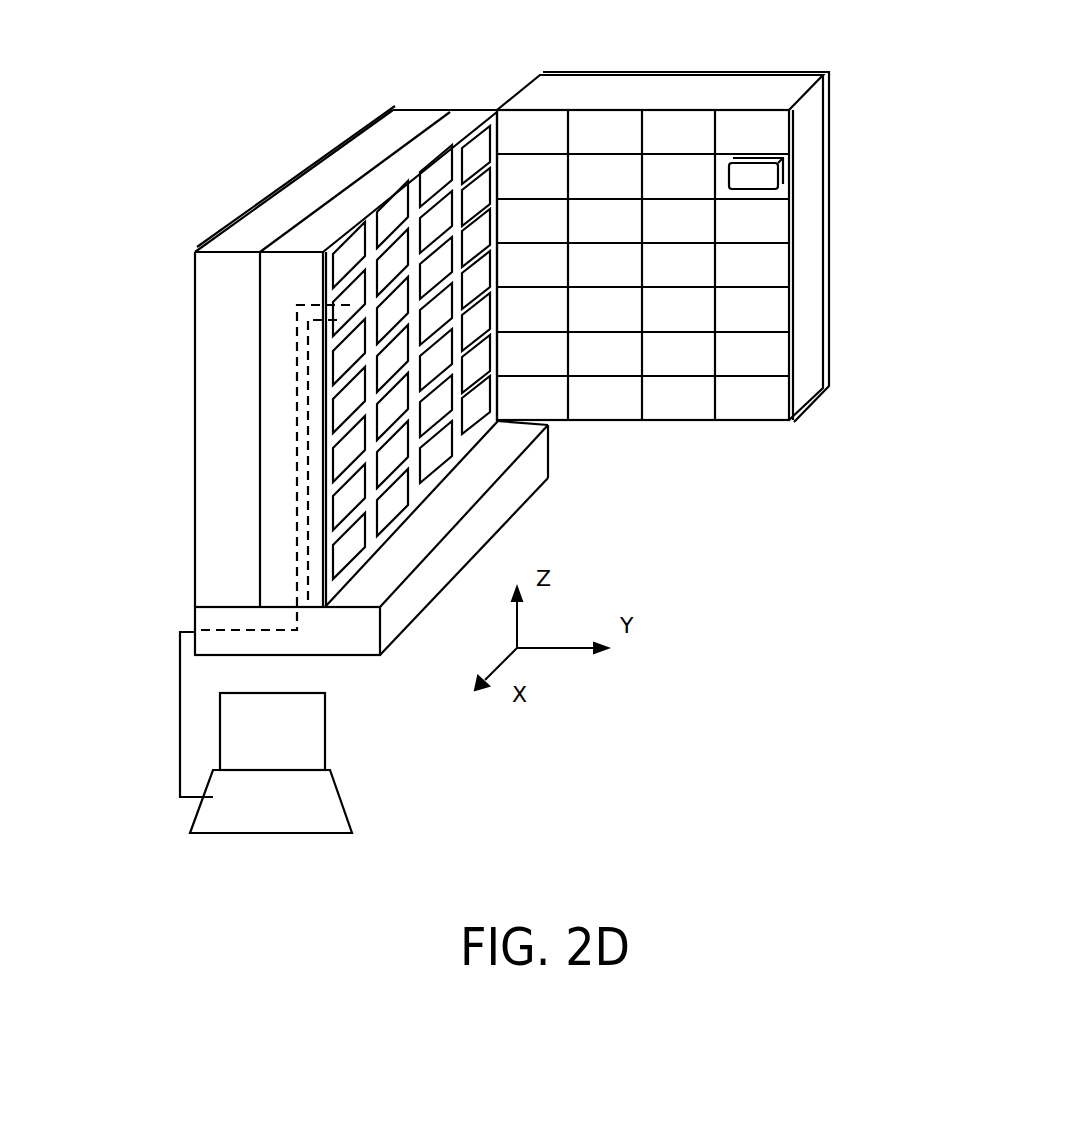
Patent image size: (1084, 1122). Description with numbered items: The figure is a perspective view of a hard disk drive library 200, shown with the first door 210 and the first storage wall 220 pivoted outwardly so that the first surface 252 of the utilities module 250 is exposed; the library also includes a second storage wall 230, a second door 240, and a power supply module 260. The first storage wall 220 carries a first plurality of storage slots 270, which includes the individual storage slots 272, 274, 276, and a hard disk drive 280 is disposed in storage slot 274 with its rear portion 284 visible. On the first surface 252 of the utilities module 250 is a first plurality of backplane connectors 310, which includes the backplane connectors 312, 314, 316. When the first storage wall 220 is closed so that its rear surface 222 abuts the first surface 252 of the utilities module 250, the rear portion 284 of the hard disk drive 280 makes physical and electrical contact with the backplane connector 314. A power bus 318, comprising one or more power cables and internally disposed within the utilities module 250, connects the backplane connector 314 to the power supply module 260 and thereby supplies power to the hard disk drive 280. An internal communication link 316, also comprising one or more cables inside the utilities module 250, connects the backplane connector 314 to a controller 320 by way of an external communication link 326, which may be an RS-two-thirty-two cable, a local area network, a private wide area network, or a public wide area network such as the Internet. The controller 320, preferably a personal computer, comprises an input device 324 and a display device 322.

The hard disk drive library 200 is at (410, 540).
The first door 210 is at (695, 211).
The first storage wall 220 is at (705, 100).
The rear surface 222 is at (653, 138).
The second storage wall 230 is at (346, 340).
The second door 240 is at (305, 172).
The utilities module 250 is at (305, 228).
The first surface 252 is at (410, 329).
The power supply module 260 is at (360, 636).
The first plurality of storage slots 270 is at (725, 122).
The storage slot 272 is at (773, 123).
The storage slot 274 is at (785, 178).
The storage slot 276 is at (777, 228).
The hard disk drive 280 is at (783, 157).
The rear portion 284 is at (773, 177).
The first plurality of backplane connectors 310 is at (393, 225).
The backplane connector 312 is at (342, 258).
The backplane connector 314 is at (350, 302).
The internal communication link 316 is at (297, 360).
The power bus 318 is at (308, 405).
The controller 320 is at (303, 809).
The display device 322 is at (303, 705).
The input device 324 is at (230, 800).
The external communication link 326 is at (178, 691).